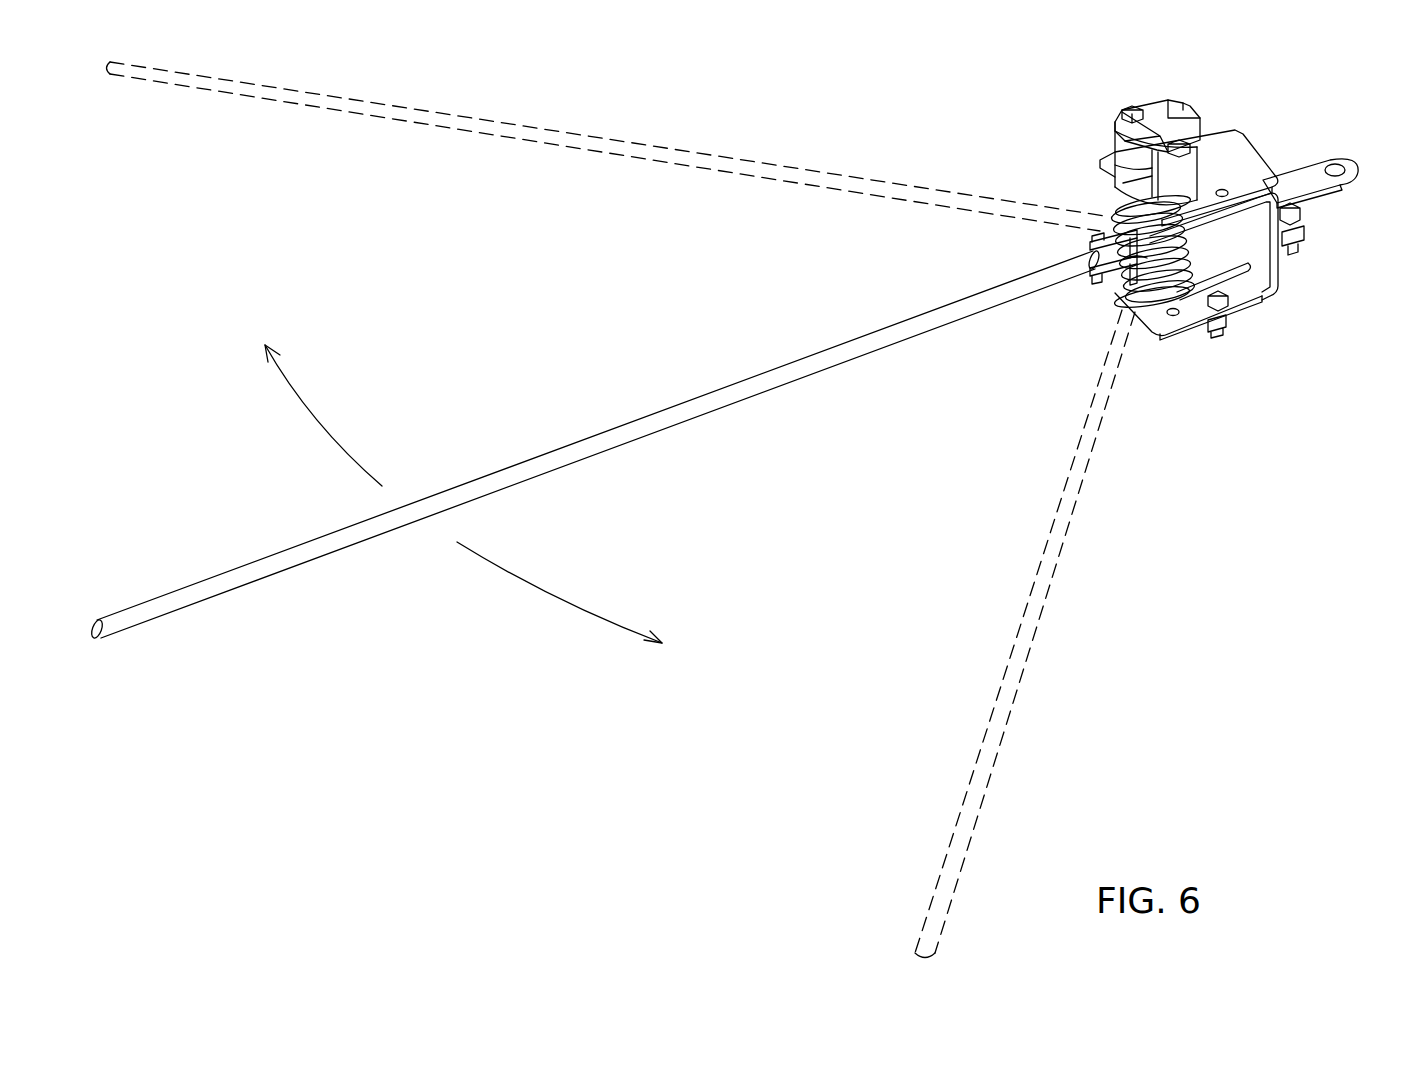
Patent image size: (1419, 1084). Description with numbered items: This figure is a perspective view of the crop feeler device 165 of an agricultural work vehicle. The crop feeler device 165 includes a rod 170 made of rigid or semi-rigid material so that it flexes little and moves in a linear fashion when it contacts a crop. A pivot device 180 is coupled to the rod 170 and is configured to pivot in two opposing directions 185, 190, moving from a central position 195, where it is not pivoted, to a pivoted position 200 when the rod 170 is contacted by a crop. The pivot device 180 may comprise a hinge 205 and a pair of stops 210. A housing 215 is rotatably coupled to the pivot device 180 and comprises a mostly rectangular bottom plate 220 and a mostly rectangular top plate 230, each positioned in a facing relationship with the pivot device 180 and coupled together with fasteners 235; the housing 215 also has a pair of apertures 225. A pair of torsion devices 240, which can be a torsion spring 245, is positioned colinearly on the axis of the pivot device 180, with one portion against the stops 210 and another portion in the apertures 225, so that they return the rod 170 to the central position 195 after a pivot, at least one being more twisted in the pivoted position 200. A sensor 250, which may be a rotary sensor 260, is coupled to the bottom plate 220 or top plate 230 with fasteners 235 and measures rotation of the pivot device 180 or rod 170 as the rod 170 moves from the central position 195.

The crop feeler device 165 is at (794, 103).
The rod 170 is at (748, 390).
The pivot device 180 is at (1098, 292).
The opposing direction 185 is at (318, 418).
The opposing direction 190 is at (557, 597).
The central position 195 is at (563, 420).
The pivoted position 200 is at (307, 127).
The hinge 205 is at (1145, 338).
The stops 210 is at (1107, 215).
The housing 215 is at (1092, 97).
The bottom plate 220 is at (1190, 313).
The apertures 225 is at (1226, 142).
The top plate 230 is at (1238, 182).
The fasteners 235 is at (1166, 148).
The torsion devices 240 is at (1080, 245).
The torsion spring 245 is at (1115, 207).
The sensor 250 is at (1208, 100).
The rotary sensor 260 is at (1156, 118).